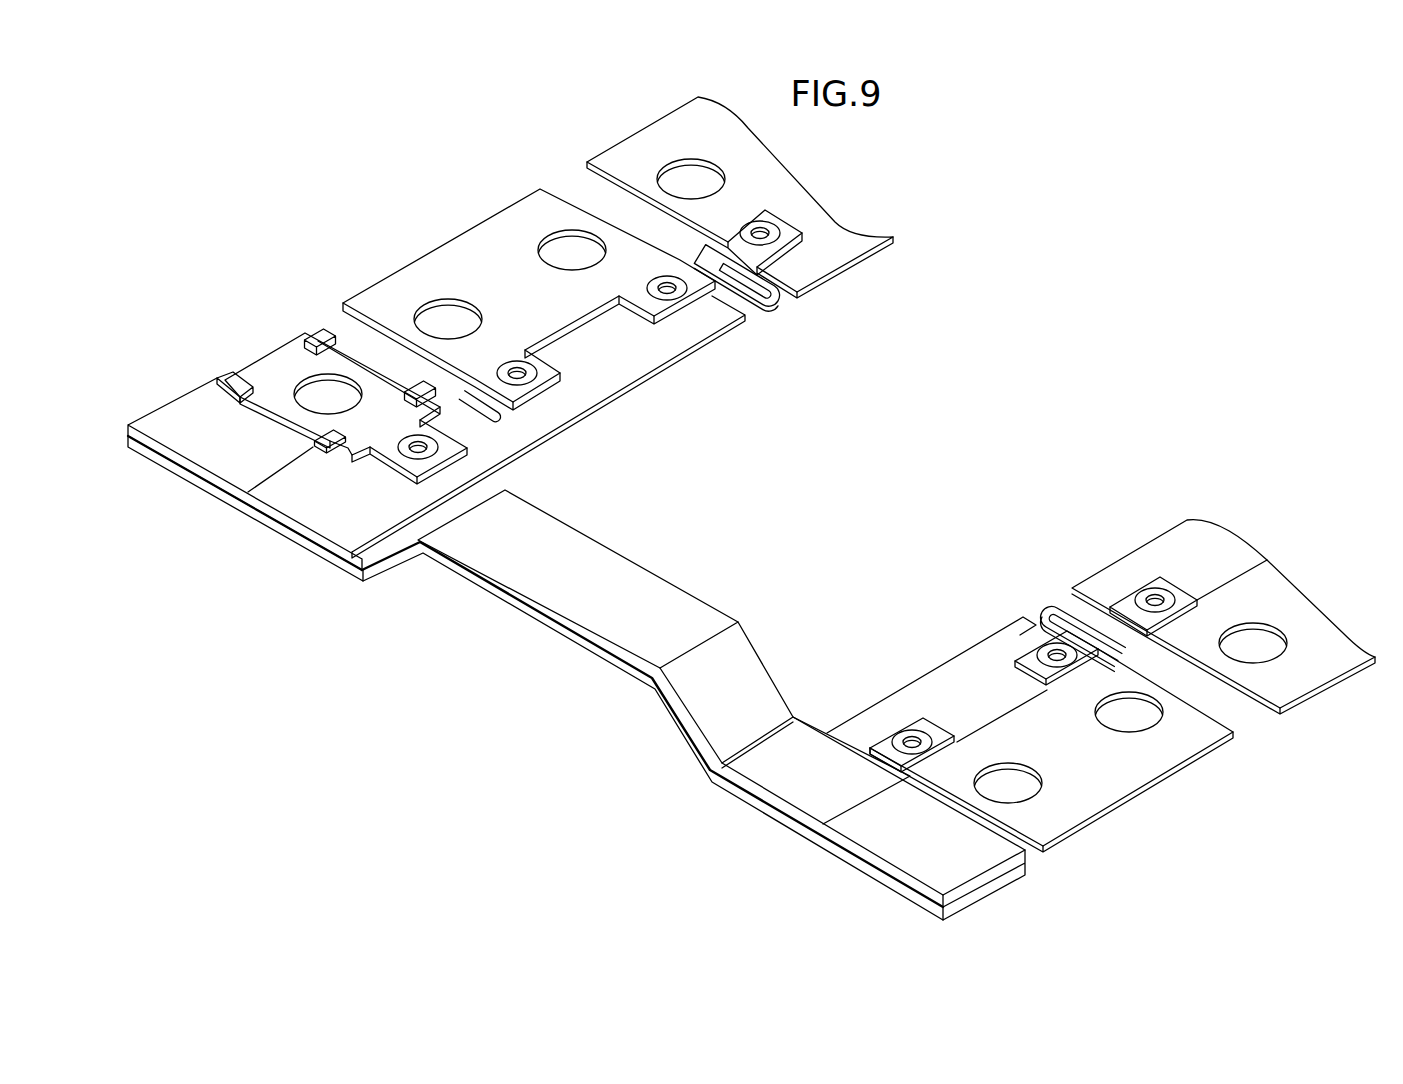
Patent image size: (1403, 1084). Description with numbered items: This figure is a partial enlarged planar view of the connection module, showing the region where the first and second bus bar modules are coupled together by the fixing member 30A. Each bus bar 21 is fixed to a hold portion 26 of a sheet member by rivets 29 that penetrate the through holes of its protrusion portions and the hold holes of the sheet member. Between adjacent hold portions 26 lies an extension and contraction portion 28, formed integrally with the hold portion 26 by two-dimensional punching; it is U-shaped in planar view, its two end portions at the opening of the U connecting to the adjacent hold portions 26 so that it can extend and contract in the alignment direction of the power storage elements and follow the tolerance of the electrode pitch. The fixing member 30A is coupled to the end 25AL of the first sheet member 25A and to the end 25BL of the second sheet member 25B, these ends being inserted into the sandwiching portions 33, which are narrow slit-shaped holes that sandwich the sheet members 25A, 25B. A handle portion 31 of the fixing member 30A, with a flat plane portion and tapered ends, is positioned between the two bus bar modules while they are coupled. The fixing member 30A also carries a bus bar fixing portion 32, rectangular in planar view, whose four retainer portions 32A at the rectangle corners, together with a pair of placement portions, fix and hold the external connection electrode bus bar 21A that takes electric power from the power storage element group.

The bus bar 21 is at (475, 224).
The external connection electrode bus bar 21A is at (277, 352).
The bus bar fixing portion 32 is at (317, 320).
The retainer portion 32A is at (228, 378).
The hold portion 26 is at (848, 242).
The extension and contraction portion 28 is at (784, 304).
The rivet 29 is at (1012, 618).
The first sheet member 25A is at (853, 714).
The end of first sheet member 25AL is at (743, 797).
The second sheet member 25B is at (684, 367).
The end of second sheet member 25BL is at (292, 537).
The sandwiching portion 33 is at (296, 560).
The handle portion 31 is at (684, 579).
The fixing member 30A is at (530, 641).